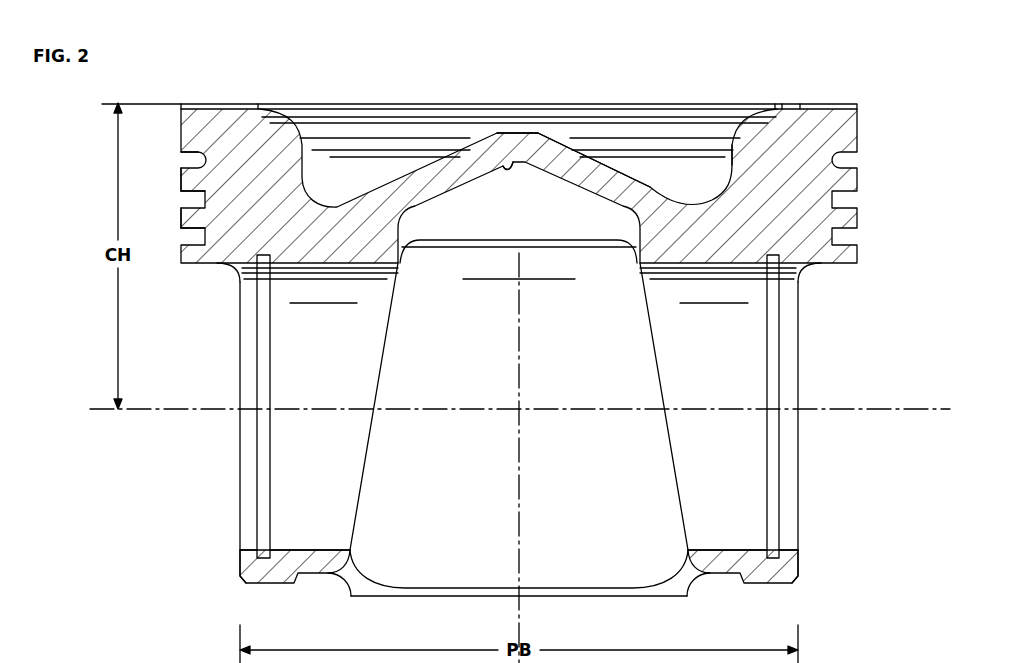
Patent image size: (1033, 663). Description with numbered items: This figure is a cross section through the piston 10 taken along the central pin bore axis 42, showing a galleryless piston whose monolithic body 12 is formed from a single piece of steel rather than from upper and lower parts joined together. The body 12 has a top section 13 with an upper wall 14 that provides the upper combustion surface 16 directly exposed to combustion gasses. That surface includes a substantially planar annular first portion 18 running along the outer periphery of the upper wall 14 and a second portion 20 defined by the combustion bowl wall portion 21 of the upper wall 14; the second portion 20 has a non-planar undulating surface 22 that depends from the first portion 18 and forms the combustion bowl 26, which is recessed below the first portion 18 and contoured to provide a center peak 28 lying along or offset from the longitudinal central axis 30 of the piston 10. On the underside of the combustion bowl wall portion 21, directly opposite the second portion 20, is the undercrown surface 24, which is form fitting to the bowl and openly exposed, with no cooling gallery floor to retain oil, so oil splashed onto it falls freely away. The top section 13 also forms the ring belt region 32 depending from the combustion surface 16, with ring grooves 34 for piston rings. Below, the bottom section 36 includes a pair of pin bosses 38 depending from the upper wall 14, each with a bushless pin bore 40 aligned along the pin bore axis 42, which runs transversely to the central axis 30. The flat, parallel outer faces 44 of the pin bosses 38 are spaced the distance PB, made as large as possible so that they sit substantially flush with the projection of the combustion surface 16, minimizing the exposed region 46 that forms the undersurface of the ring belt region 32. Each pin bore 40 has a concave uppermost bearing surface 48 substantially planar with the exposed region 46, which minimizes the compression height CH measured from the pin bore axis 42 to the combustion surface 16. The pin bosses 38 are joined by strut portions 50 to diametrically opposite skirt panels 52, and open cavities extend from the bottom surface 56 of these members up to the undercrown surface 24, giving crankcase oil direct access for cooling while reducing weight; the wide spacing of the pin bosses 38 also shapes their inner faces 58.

The piston 10 is at (847, 36).
The monolithic body 12 is at (842, 122).
The top section 13 is at (905, 104).
The upper wall 14 is at (258, 125).
The upper combustion surface 16 is at (222, 101).
The annular first portion 18 is at (857, 100).
The second portion 20 is at (775, 85).
The combustion bowl wall portion 21 is at (742, 148).
The undulating surface 22 is at (563, 134).
The undercrown surface 24 is at (502, 170).
The combustion bowl 26 is at (678, 134).
The center peak 28 is at (519, 132).
The longitudinal central axis 30 is at (521, 572).
The ring belt region 32 is at (175, 109).
The ring grooves 34 is at (195, 226).
The bottom section 36 is at (889, 263).
The pin bosses 38 is at (243, 581).
The pin bore 40 is at (310, 538).
The pin bore axis 42 is at (183, 413).
The outer faces 44 is at (238, 550).
The exposed region 46 is at (205, 267).
The uppermost bearing surface 48 is at (345, 266).
The strut portions 50 is at (333, 582).
The skirt panels 52 is at (602, 596).
The bottom surface 56 is at (437, 597).
The inner faces 58 is at (356, 530).